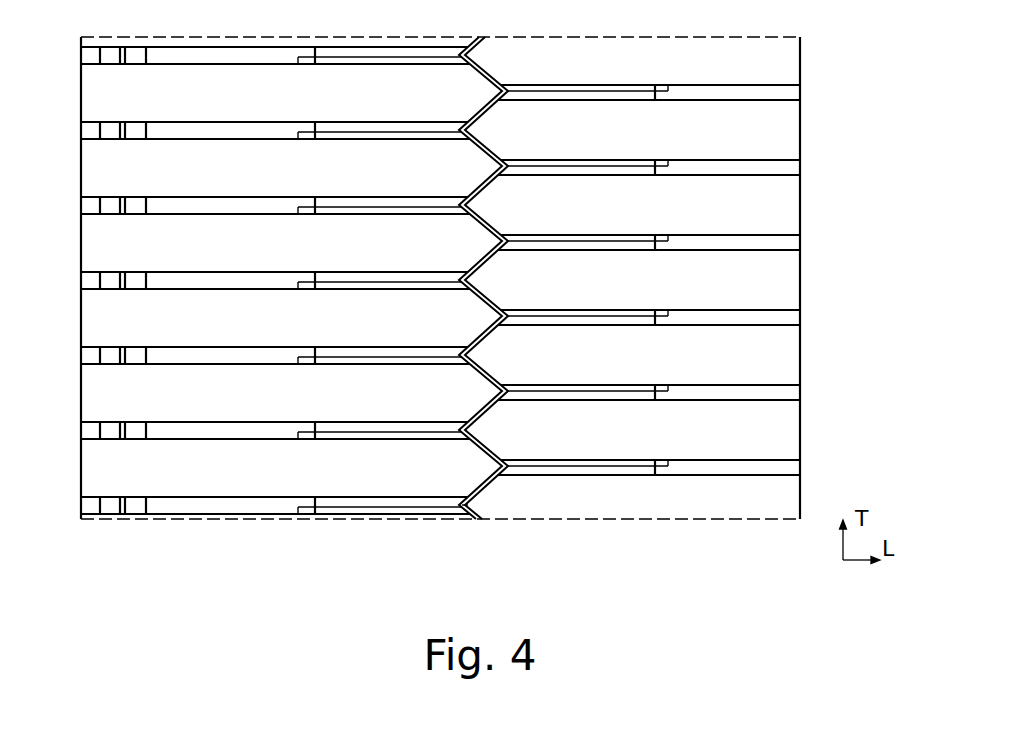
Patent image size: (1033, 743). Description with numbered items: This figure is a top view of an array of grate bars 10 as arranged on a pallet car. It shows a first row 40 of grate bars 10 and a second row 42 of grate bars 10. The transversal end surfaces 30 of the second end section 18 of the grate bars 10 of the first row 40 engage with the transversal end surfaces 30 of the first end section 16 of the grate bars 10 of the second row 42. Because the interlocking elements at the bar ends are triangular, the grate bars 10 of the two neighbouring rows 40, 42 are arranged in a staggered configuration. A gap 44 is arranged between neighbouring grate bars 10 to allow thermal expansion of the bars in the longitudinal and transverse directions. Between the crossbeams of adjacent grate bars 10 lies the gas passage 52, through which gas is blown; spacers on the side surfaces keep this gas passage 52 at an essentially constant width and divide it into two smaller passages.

The grate bar 10 is at (204, 488).
The gas passage 52 is at (268, 430).
The second end section 18 is at (460, 508).
The transversal end surfaces 30 is at (470, 470).
The gap 44 is at (483, 497).
The first end section 16 is at (495, 432).
The first row 40 is at (317, 563).
The second row 42 is at (654, 563).